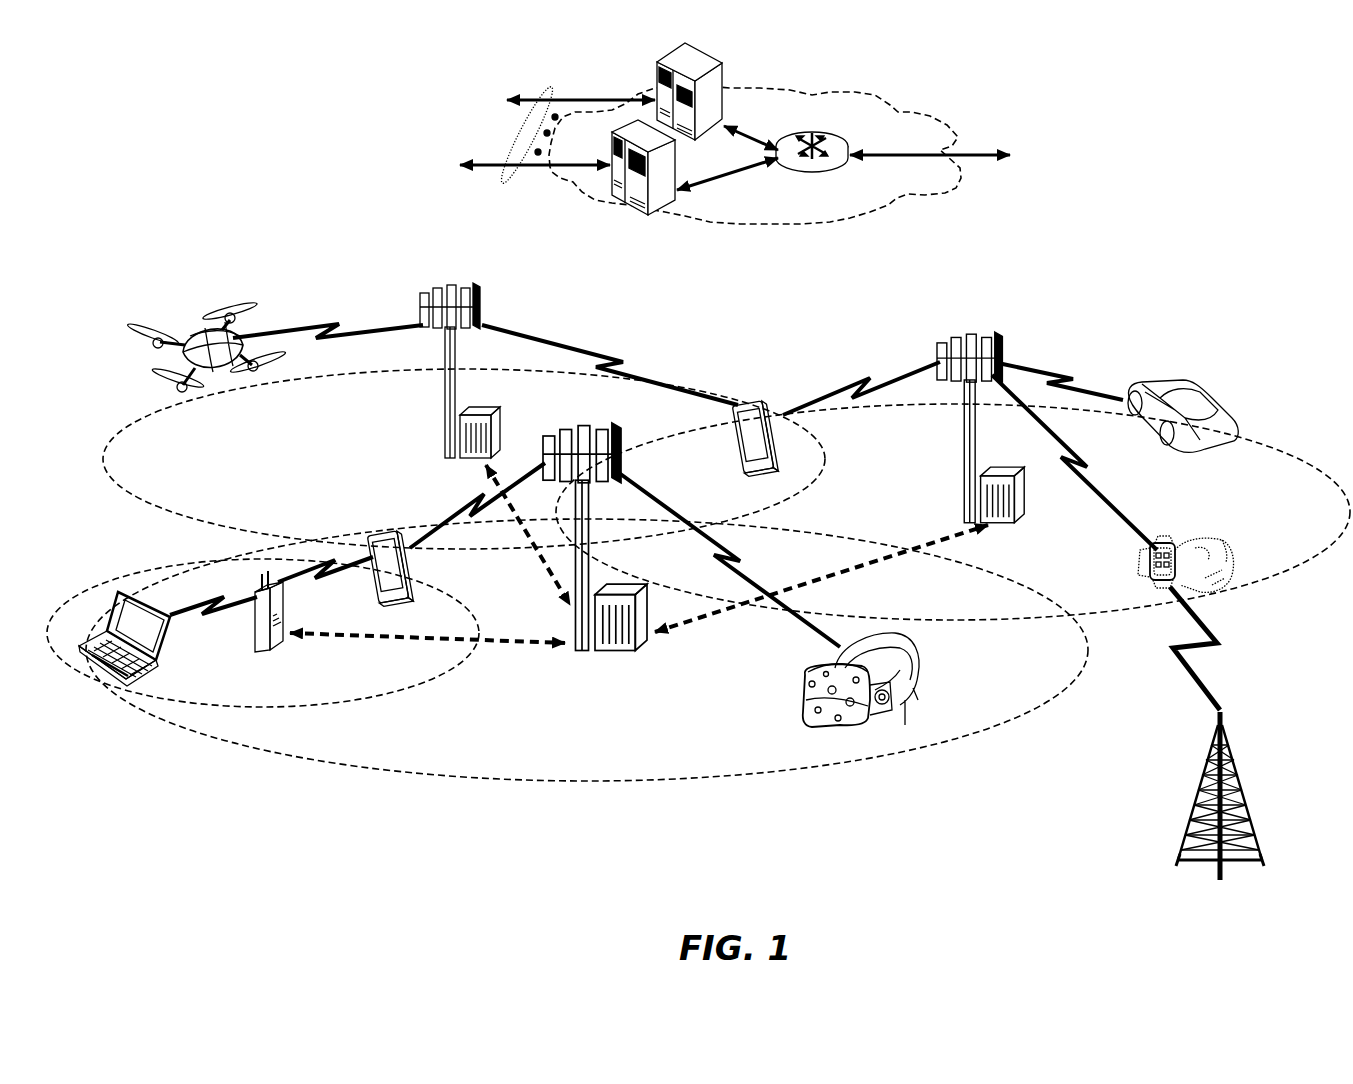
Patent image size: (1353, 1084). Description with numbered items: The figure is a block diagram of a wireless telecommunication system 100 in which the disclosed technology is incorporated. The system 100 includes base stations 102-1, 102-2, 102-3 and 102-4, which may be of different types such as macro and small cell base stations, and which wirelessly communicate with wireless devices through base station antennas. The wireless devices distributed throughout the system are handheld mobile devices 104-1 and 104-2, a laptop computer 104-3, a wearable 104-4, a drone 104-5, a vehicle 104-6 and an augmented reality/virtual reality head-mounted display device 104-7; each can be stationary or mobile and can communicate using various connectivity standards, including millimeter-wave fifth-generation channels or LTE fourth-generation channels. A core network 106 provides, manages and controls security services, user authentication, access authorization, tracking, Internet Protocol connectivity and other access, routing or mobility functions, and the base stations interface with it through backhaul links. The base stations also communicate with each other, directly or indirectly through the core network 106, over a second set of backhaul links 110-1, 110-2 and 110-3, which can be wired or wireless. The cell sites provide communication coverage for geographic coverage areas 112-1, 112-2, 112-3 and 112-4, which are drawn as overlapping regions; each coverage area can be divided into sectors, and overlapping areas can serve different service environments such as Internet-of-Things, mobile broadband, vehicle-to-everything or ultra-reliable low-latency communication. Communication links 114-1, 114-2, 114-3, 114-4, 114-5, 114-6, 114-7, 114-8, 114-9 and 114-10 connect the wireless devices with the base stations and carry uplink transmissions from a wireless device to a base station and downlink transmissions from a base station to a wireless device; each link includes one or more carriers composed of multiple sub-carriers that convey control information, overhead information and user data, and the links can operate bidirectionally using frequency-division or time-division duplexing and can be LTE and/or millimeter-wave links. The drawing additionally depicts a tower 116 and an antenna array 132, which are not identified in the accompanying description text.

The wireless telecommunication system 100 is at (1253, 148).
The base station 102-1 is at (578, 655).
The base station 102-2 is at (446, 410).
The base station 102-3 is at (962, 440).
The base station 102-4 is at (256, 640).
The wireless device 104-1 is at (408, 582).
The wireless device 104-2 is at (736, 443).
The wireless device 104-3 is at (100, 680).
The wireless device 104-4 is at (1164, 545).
The wireless device 104-5 is at (215, 374).
The wireless device 104-6 is at (1200, 400).
The wireless device 104-7 is at (902, 665).
The core network 106 is at (845, 218).
The backhaul link 110-1 is at (325, 640).
The backhaul link 110-2 is at (887, 566).
The backhaul link 110-3 is at (541, 565).
The geographic coverage area 112-1 is at (505, 783).
The geographic coverage area 112-2 is at (392, 704).
The geographic coverage area 112-3 is at (163, 511).
The geographic coverage area 112-4 is at (1258, 440).
The communication link 114-1 is at (742, 565).
The communication link 114-2 is at (470, 512).
The communication link 114-3 is at (180, 617).
The communication link 114-4 is at (330, 578).
The communication link 114-5 is at (333, 326).
The communication link 114-6 is at (614, 360).
The communication link 114-7 is at (862, 383).
The communication link 114-8 is at (1090, 487).
The communication link 114-9 is at (1060, 375).
The communication link 114-10 is at (1205, 648).
The transmission tower 116 is at (1238, 778).
The antenna array 132 is at (515, 183).